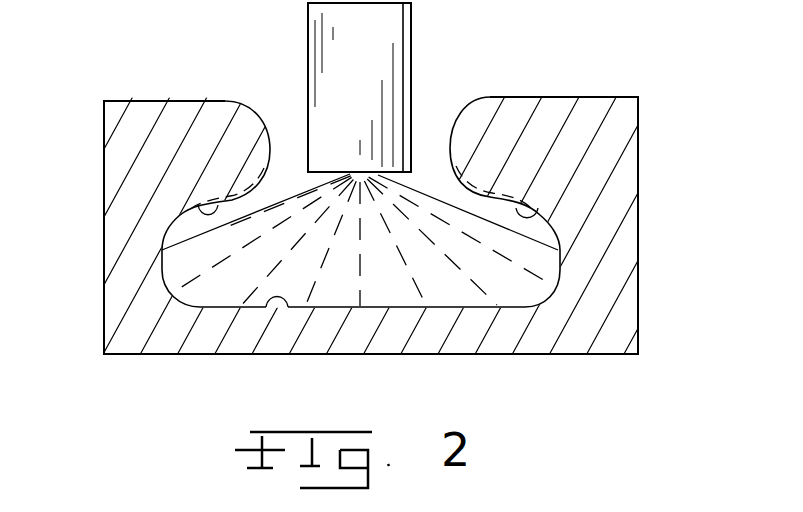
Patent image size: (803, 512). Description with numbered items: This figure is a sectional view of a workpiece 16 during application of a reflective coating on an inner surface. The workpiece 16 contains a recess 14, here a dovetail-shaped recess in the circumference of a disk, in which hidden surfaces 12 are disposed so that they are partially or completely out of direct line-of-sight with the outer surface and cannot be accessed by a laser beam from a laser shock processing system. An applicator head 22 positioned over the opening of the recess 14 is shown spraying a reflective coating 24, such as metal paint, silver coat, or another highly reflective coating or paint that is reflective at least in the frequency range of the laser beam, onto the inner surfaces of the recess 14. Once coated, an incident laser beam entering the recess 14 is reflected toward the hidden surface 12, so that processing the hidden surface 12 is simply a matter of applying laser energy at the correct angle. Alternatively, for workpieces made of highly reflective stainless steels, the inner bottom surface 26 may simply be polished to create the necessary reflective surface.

The hidden surface 12 is at (205, 210).
The recess 14 is at (432, 128).
The workpiece 16 is at (583, 340).
The applicator head 22 is at (327, 52).
The reflective coating 24 is at (455, 262).
The inner bottom surface 26 is at (280, 300).